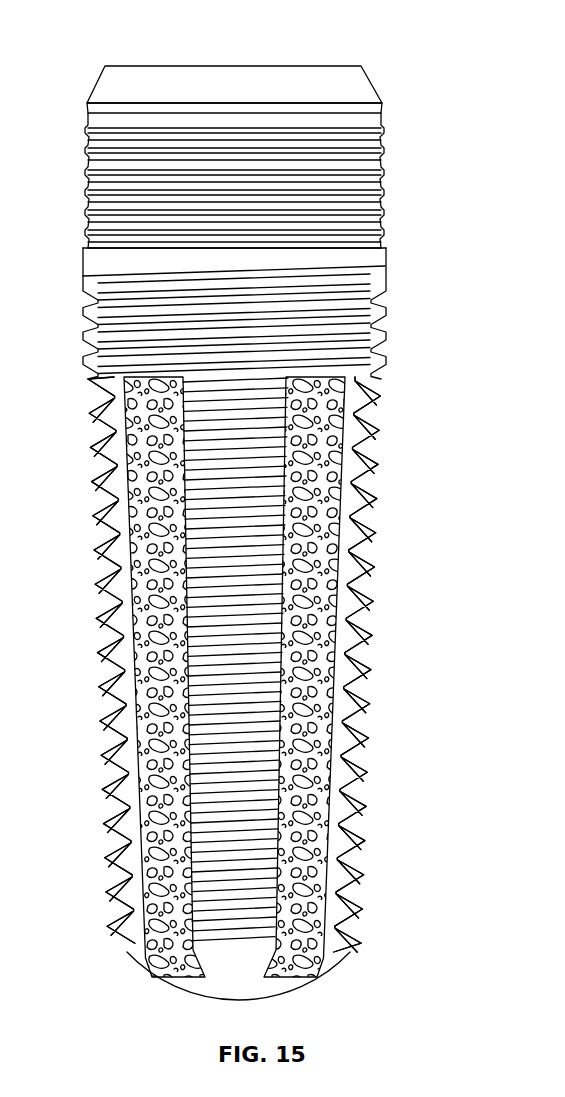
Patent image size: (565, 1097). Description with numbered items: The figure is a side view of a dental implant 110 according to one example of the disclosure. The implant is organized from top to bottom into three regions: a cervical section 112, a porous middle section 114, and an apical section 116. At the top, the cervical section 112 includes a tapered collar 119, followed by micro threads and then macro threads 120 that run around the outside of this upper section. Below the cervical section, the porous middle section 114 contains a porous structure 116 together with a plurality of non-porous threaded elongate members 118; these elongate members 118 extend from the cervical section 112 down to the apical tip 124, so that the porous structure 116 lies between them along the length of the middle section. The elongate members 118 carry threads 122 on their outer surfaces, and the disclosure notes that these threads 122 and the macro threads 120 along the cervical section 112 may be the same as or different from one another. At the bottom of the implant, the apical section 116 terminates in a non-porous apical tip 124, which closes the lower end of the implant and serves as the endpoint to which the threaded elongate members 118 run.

The dental implant 110 is at (106, 27).
The cervical section 112 is at (72, 164).
The porous middle section 114 is at (77, 620).
The apical section 116 is at (325, 660).
The non-porous threaded elongate members 118 is at (382, 154).
The tapered collar 119 is at (372, 78).
The macro threads 120 is at (386, 289).
The threads 122 is at (366, 606).
The apical tip 124 is at (293, 990).